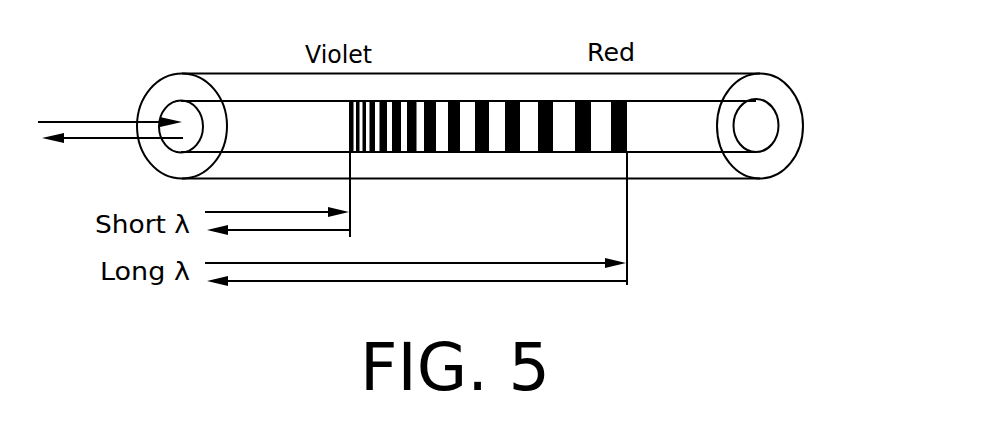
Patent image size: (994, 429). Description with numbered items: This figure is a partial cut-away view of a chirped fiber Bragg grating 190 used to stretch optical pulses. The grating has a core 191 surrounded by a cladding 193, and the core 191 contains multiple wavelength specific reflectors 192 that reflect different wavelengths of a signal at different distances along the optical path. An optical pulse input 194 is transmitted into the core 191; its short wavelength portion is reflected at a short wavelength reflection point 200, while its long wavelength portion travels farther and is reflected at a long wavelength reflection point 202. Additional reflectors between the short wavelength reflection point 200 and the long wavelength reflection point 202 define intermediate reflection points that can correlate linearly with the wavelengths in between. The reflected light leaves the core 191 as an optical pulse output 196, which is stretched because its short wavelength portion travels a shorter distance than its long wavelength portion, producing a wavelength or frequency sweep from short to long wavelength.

The chirped fiber Bragg grating 190 is at (698, 73).
The core 191 is at (762, 85).
The wavelength specific reflectors 192 is at (392, 100).
The cladding 193 is at (783, 157).
The optical pulse input 194 is at (83, 120).
The optical pulse output 196 is at (83, 143).
The short wavelength reflection point 200 is at (350, 205).
The long wavelength reflection point 202 is at (627, 222).